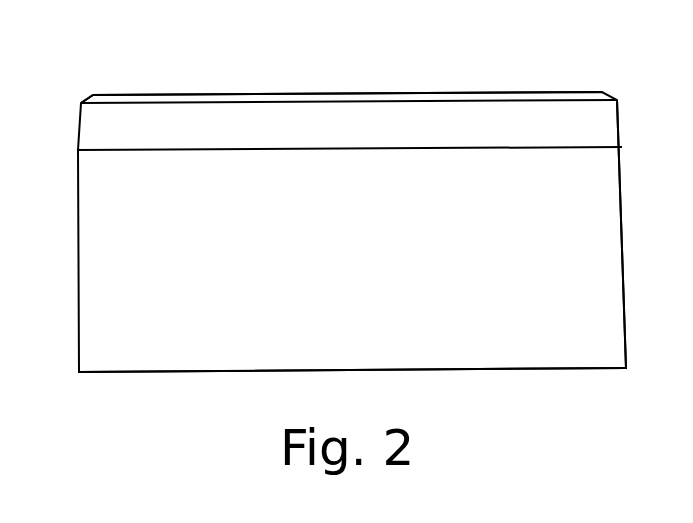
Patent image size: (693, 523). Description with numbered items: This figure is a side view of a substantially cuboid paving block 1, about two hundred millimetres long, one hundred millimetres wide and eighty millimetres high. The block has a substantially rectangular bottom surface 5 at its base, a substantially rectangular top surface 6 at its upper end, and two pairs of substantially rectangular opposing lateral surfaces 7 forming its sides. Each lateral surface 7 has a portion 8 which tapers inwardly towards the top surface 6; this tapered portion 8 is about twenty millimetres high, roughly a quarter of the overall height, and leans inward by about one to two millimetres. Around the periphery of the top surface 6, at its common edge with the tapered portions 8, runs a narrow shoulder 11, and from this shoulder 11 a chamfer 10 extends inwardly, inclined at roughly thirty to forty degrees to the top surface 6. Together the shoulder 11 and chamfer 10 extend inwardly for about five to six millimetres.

The paving block 1 is at (352, 207).
The bottom surface 5 is at (490, 374).
The top surface 6 is at (310, 93).
The lateral surface 7 is at (600, 303).
The tapered portion 8 is at (608, 124).
The chamfer 10 is at (142, 96).
The shoulder 11 is at (81, 102).